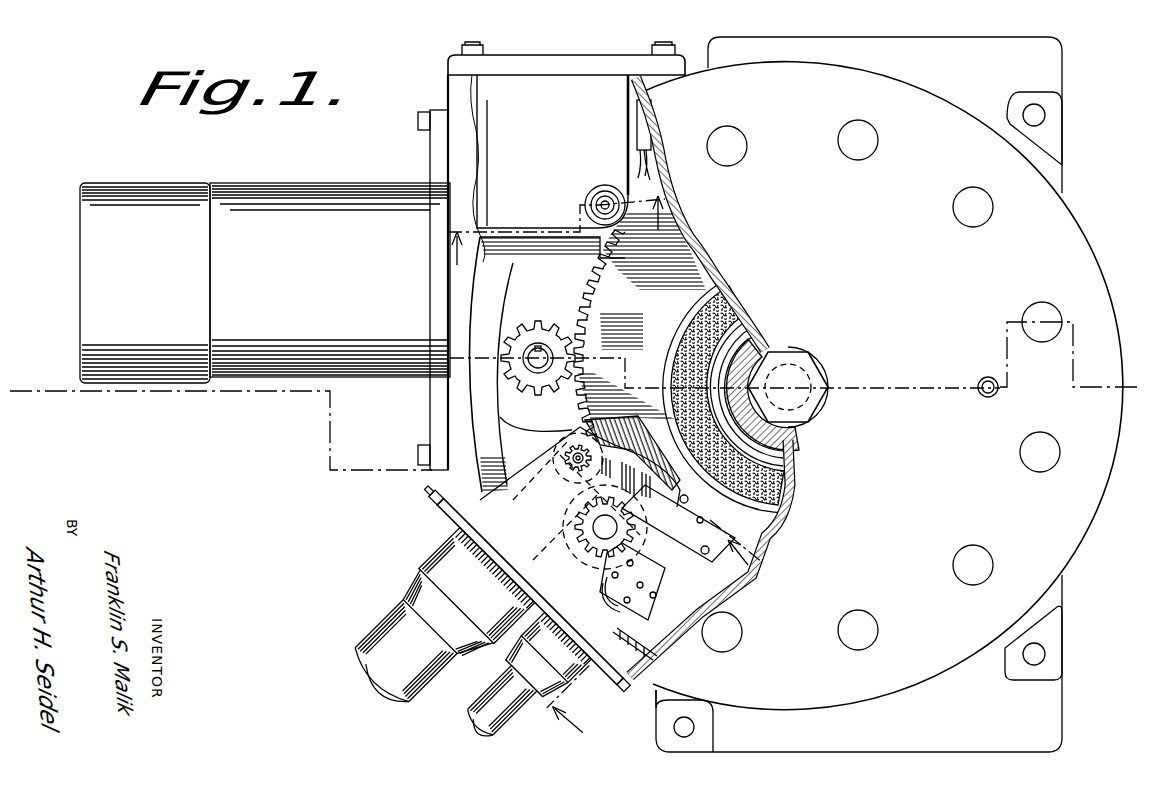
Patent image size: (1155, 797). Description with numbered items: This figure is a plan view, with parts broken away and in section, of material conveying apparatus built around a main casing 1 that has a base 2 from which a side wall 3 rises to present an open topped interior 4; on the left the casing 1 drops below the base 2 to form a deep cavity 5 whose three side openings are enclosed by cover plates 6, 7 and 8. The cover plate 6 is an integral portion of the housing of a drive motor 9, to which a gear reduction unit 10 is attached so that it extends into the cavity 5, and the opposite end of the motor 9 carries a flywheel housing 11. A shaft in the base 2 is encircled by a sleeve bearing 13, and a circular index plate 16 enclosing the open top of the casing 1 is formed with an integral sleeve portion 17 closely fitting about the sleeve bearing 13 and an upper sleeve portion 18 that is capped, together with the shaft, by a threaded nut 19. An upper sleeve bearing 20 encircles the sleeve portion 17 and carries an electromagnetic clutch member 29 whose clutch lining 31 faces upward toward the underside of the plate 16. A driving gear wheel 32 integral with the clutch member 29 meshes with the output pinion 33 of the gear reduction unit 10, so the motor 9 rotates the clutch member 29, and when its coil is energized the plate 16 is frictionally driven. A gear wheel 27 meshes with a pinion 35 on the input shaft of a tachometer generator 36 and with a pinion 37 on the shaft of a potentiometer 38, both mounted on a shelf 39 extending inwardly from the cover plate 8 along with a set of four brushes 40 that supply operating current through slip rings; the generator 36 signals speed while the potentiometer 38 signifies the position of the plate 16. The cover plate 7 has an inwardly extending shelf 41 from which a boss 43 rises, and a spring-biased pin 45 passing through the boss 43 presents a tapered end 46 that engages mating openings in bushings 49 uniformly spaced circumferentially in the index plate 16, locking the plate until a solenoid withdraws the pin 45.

The main casing 1 is at (450, 150).
The base 2 is at (980, 45).
The side wall 3 is at (682, 635).
The open topped interior 4 is at (556, 219).
The deep cavity 5 is at (512, 438).
The cover plate 6 is at (446, 168).
The cover plate 7 is at (538, 56).
The cover plate 8 is at (438, 515).
The drive motor 9 is at (292, 190).
The gear reduction unit 10 is at (548, 262).
The flywheel housing 11 is at (95, 258).
The sleeve bearing 13 is at (760, 356).
The circular index plate 16 is at (1062, 250).
The sleeve portion 17 is at (775, 437).
The upper sleeve portion 18 is at (830, 400).
The threaded nut 19 is at (804, 363).
The upper sleeve bearing 20 is at (776, 453).
The gear wheel 27 is at (600, 505).
The electromagnetic clutch member 29 is at (716, 268).
The clutch lining 31 is at (735, 302).
The driving gear wheel 32 is at (595, 301).
The output pinion 33 is at (534, 378).
The pinion 35 is at (575, 470).
The tachometer generator 36 is at (552, 476).
The pinion 37 is at (575, 530).
The potentiometer 38 is at (560, 548).
The shelf 39 is at (490, 505).
The brushes 40 is at (690, 535).
The shelf 41 is at (590, 85).
The boss 43 is at (592, 188).
The pin 45 is at (602, 203).
The tapered end 46 is at (607, 203).
The bushings 49 is at (740, 148).